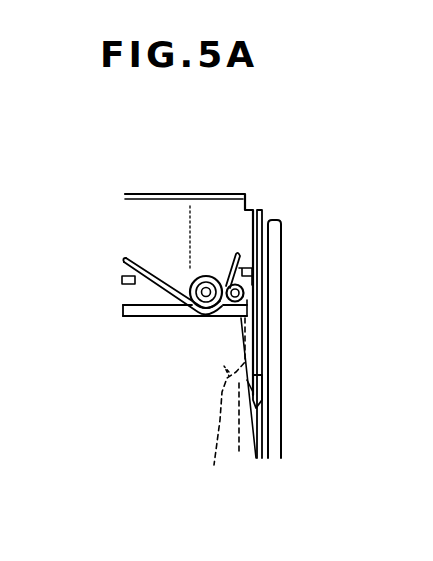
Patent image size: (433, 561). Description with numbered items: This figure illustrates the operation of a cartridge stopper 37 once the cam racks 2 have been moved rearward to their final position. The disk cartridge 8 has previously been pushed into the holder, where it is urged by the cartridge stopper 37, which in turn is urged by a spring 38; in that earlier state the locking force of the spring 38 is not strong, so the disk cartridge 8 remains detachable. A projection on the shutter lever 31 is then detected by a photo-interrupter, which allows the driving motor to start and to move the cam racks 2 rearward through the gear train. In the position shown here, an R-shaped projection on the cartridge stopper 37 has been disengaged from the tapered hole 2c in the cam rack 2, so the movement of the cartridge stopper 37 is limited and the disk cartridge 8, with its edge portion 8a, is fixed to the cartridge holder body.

The cam rack 2 is at (282, 304).
The tapered hole 2c is at (268, 343).
The shutter lever 31 is at (155, 297).
The cartridge stopper 37 is at (282, 240).
The spring 38 is at (128, 263).
The disk cartridge 8 is at (175, 403).
The door projection 8a is at (220, 411).